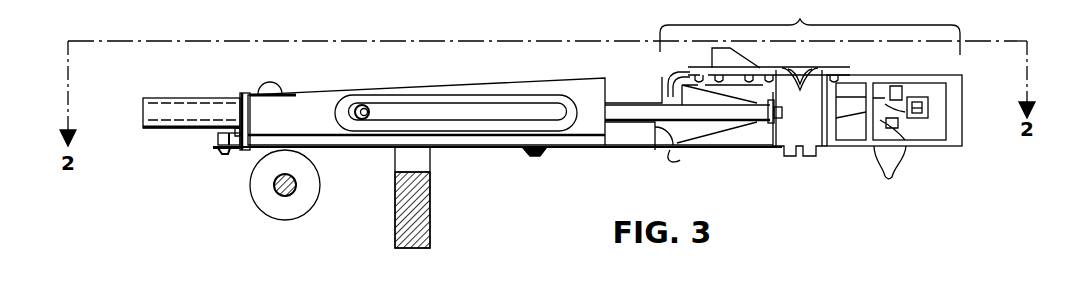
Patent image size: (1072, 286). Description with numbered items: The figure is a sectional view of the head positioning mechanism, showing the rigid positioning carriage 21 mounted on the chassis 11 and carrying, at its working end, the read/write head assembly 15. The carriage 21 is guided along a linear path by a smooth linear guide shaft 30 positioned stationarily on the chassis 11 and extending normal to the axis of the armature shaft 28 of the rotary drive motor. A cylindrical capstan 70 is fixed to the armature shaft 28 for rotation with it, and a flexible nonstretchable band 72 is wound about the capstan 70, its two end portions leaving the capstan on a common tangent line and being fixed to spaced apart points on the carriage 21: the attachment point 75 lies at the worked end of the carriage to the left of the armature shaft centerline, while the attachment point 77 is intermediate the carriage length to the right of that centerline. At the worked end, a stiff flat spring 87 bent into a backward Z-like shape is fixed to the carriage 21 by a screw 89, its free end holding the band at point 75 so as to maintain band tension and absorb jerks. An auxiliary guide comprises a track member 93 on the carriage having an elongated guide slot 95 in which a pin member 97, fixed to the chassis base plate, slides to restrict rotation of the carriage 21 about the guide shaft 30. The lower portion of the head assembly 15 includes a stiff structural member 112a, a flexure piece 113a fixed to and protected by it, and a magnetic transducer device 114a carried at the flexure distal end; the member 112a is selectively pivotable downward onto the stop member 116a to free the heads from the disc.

The read/write head assembly 15 is at (810, 28).
The linear guide shaft 30 is at (183, 100).
The flat spring 87 is at (248, 92).
The screw 89 is at (282, 90).
The positioning carriage 21 is at (318, 115).
The track member 93 is at (467, 97).
The guide slot 95 is at (508, 113).
The pin member 97 is at (364, 119).
The attachment point 75 is at (222, 155).
The flexible nonstretchable band 72 is at (461, 150).
The attachment point 77 is at (537, 156).
The cylindrical capstan 70 is at (264, 196).
The armature shaft 28 is at (293, 190).
The chassis 11 is at (420, 190).
The stop member 116a is at (684, 150).
The structural member 112a is at (873, 148).
The flexure piece 113a is at (903, 166).
The magnetic transducer device 114a is at (930, 110).